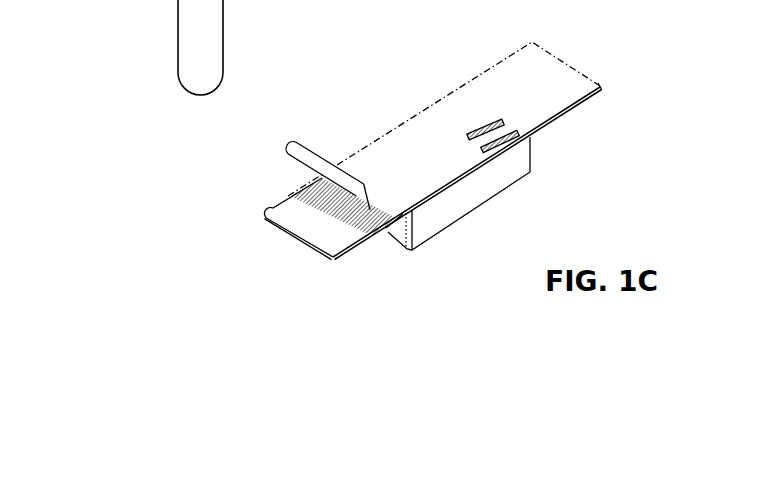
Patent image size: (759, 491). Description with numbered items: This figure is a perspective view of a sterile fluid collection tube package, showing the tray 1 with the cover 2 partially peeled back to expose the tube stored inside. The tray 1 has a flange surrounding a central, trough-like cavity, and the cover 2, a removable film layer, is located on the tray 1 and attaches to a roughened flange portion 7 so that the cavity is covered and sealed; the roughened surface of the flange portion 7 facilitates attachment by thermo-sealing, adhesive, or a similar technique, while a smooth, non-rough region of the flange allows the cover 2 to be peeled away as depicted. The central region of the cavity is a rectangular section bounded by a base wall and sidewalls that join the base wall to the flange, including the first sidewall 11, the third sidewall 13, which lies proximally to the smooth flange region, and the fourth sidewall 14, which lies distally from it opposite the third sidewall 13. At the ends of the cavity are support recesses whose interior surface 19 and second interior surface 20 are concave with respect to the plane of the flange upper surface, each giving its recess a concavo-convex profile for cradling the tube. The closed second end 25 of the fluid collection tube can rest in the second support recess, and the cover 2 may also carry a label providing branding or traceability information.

The tray 1 is at (332, 246).
The cover 2 is at (420, 145).
The flange portion 7 is at (340, 200).
The first sidewall 11 is at (470, 196).
The third sidewall 13 is at (404, 233).
The fourth sidewall 14 is at (552, 131).
The interior surface 19 is at (310, 218).
The second interior surface 20 is at (508, 108).
The second end 25 is at (213, 88).